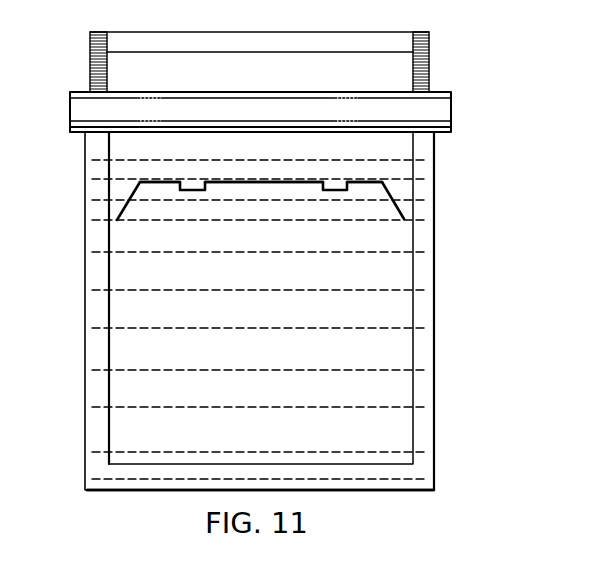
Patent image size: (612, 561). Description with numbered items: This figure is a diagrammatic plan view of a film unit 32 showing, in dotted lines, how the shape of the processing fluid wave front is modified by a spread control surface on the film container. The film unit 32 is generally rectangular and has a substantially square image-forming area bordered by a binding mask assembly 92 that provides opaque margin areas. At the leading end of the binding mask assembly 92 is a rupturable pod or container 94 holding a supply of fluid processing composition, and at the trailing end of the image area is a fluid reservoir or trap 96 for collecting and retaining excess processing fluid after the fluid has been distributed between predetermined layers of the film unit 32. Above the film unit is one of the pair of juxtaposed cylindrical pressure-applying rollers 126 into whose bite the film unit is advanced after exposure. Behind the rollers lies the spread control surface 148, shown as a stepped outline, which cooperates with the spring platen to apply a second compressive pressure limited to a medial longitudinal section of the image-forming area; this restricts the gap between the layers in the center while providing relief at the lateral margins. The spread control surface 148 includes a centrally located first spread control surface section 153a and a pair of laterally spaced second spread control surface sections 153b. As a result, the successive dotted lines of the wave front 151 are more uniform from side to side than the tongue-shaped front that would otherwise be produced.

The film unit 32 is at (439, 221).
The binding mask assembly 92 is at (85, 302).
The rupturable pod or container 94 is at (162, 72).
The fluid reservoir or trap 96 is at (127, 483).
The pressure-applying roller 126 is at (438, 92).
The spread control surface 148 is at (151, 203).
The wave front 151 is at (392, 289).
The first spread control surface section 153a is at (257, 188).
The second spread control surface sections 153b is at (157, 187).